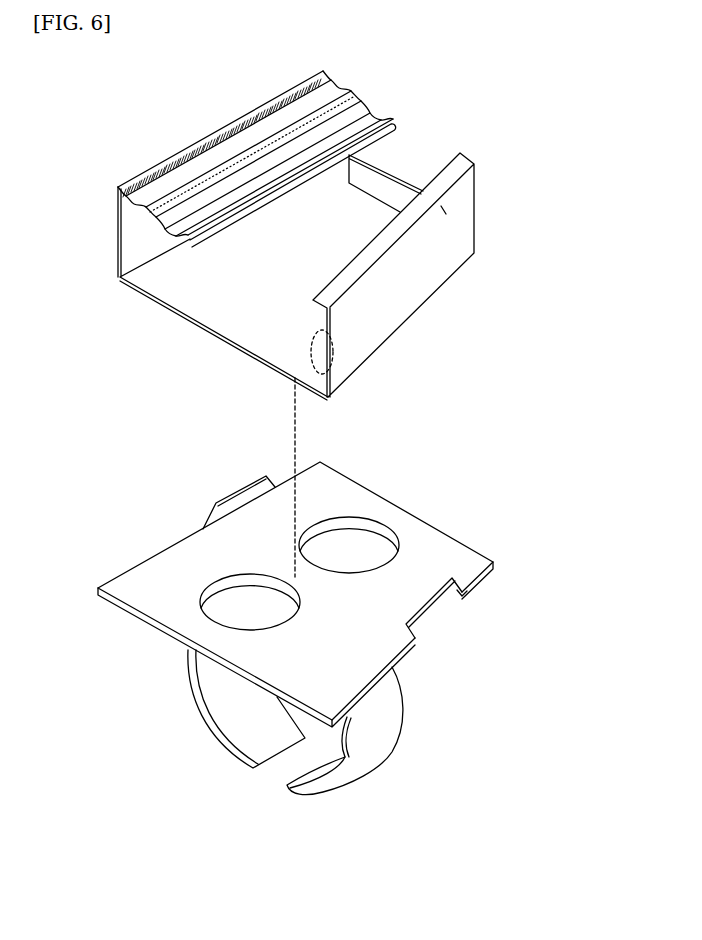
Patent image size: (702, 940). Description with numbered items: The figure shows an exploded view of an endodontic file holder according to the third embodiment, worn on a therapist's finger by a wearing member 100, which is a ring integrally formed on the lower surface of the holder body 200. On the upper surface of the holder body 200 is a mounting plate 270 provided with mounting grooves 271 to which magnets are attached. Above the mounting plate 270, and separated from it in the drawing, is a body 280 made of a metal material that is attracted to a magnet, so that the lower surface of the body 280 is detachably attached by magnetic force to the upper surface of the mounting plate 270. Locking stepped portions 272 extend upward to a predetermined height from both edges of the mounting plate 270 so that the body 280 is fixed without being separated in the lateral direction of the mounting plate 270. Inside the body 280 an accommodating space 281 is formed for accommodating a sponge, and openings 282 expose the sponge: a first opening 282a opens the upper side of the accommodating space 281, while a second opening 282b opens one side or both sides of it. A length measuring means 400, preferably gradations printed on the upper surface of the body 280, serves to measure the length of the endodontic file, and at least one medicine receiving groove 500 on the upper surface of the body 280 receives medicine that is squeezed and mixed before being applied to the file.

The wearing member 100 is at (390, 711).
The holder body 200 is at (93, 363).
The mounting plate 270 is at (163, 551).
The mounting grooves 271 is at (366, 538).
The locking stepped portions 272 is at (437, 607).
The body 280 is at (200, 327).
The accommodating space 281 is at (344, 194).
The openings 282 is at (534, 262).
The first opening 282a is at (443, 210).
The second opening 282b is at (336, 372).
The length measuring means 400 is at (340, 92).
The medicine receiving groove 500 is at (364, 121).